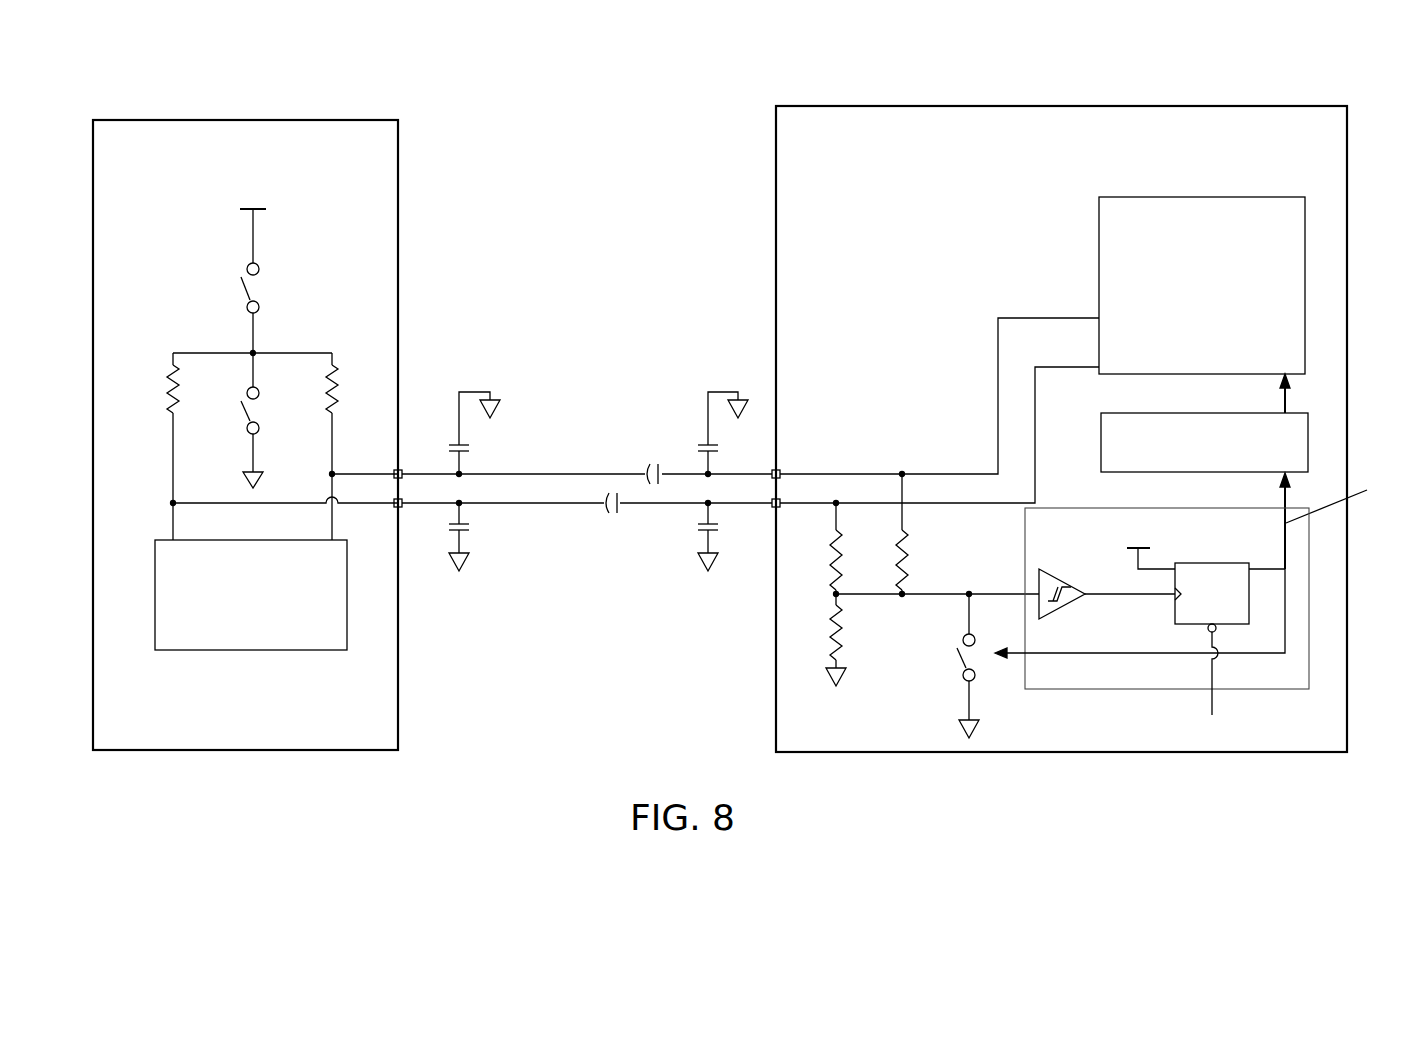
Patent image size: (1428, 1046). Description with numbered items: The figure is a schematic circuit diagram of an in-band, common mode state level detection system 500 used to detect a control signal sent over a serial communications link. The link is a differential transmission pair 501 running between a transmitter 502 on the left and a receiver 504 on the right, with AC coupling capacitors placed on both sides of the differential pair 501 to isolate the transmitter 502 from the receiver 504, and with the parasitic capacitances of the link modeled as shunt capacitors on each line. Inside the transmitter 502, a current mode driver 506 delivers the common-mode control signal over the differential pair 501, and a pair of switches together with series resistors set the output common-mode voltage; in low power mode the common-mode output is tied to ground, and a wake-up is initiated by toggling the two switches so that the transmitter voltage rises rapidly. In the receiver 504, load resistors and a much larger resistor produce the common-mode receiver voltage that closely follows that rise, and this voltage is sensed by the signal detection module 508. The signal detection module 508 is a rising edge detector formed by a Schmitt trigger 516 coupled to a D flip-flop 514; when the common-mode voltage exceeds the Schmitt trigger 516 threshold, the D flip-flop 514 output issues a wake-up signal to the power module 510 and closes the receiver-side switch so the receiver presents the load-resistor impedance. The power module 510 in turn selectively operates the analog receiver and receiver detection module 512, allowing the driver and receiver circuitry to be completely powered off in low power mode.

The in-band, common mode state level detection system 500 is at (633, 218).
The differential transmission pair 501 is at (543, 503).
The transmitter 502 is at (250, 120).
The receiver 504 is at (1033, 106).
The current mode driver 506 is at (218, 650).
The signal detection module 508 is at (1186, 510).
The power module 510 is at (1187, 413).
The receiver detection module 512 is at (1183, 197).
The D flip-flop 514 is at (1195, 562).
The Schmitt trigger 516 is at (1058, 608).